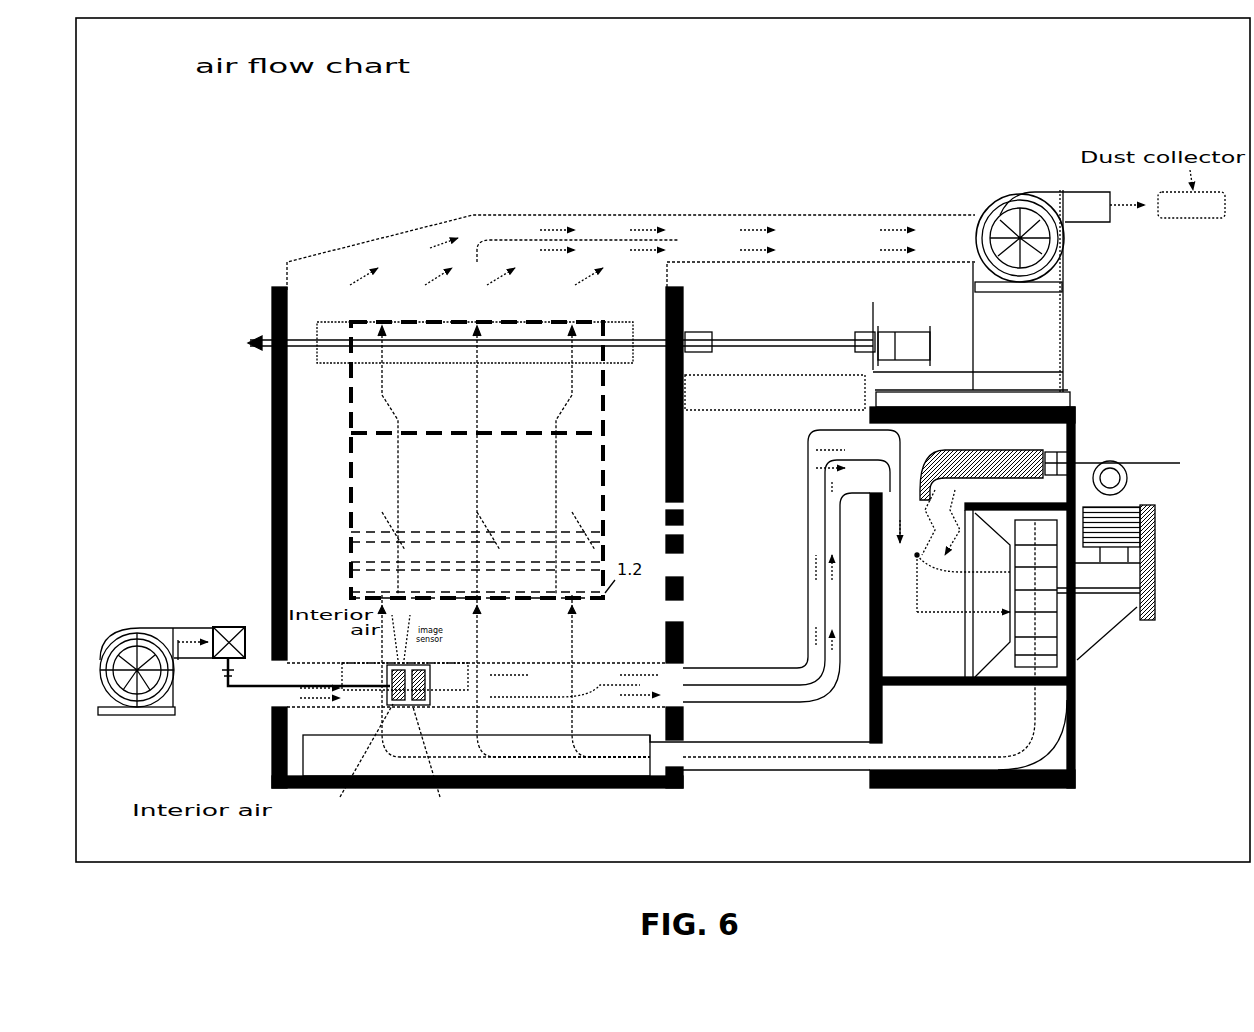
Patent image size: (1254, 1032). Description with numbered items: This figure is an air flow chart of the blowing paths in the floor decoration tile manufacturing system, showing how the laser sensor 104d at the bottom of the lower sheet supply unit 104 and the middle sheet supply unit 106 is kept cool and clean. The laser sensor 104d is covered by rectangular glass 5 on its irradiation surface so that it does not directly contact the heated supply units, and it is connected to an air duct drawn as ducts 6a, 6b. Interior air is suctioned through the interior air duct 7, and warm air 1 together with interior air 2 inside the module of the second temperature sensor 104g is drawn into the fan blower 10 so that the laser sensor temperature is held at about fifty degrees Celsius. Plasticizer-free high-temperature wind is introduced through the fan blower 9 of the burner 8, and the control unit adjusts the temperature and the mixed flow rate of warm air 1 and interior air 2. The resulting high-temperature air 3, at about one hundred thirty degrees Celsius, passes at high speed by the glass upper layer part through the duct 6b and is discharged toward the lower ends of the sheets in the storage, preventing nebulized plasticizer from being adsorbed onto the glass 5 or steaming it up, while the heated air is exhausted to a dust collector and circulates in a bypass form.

The warm air 1 is at (313, 685).
The interior air 2 is at (340, 707).
The high-temperature air flow 3 is at (664, 612).
The glass 5 is at (470, 665).
The upper duct 6a is at (715, 668).
The duct 6b is at (770, 772).
The interior air duct 7 is at (226, 625).
The burner 8 is at (1120, 465).
The fan blower 9 is at (1156, 560).
The fan blower 10 is at (1047, 648).
The lower sheet supply unit 104 is at (589, 450).
The middle sheet supply unit 106 is at (497, 511).
The laser sensor 104d is at (348, 756).
The second temperature sensor 104g is at (452, 759).